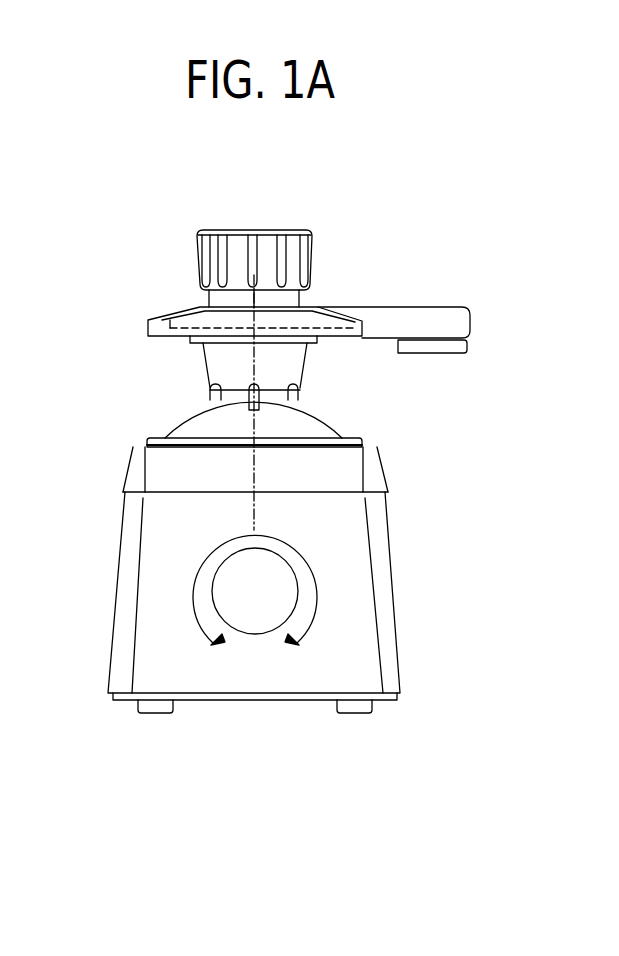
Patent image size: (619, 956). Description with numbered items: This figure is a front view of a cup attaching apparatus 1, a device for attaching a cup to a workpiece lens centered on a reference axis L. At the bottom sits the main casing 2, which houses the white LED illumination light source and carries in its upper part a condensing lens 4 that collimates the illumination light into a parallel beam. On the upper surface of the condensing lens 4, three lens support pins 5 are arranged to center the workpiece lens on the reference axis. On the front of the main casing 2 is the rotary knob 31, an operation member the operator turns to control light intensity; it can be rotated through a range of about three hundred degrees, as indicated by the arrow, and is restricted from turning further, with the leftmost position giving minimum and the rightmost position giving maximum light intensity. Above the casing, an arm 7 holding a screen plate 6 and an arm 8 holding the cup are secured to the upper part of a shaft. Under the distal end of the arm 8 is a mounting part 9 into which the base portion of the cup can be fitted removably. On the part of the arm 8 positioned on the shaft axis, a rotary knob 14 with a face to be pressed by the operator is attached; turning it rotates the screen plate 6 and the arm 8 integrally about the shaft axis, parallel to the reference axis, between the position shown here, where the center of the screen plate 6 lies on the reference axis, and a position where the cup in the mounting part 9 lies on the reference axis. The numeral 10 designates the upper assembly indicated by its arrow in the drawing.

The cup attaching apparatus 1 is at (502, 520).
The main casing 2 is at (396, 598).
The condensing lens 4 is at (340, 432).
The lens support pins 5 is at (208, 400).
The screen plate 6 is at (168, 313).
The arm 7 is at (148, 330).
The arm 8 is at (377, 307).
The mounting part 9 is at (468, 346).
The camera platform 10 is at (402, 243).
The rotary knob 14 is at (212, 241).
The rotary knob 31 is at (240, 583).